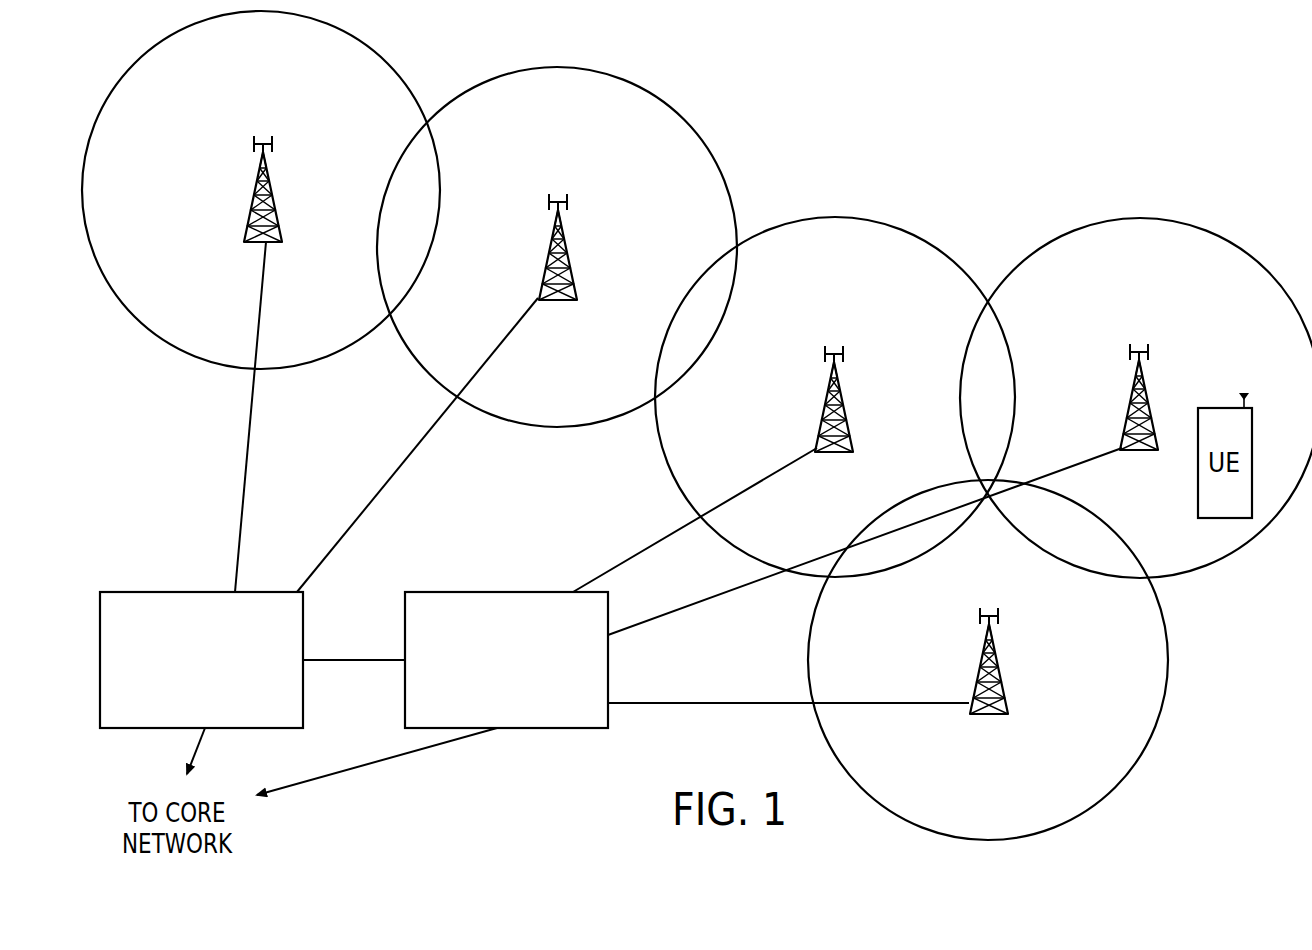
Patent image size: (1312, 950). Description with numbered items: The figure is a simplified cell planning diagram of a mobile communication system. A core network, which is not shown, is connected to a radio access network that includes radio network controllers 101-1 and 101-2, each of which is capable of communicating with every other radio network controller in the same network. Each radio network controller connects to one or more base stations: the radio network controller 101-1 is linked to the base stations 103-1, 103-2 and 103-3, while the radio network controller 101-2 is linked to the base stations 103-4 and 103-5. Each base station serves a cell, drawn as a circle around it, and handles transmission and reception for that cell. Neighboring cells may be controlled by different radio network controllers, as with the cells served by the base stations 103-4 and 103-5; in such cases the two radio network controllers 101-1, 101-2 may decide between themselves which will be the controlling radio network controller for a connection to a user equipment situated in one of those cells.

The radio network controller 101-1 is at (472, 592).
The radio network controller 101-2 is at (152, 592).
The base station 103-1 is at (1148, 387).
The base station 103-2 is at (1000, 655).
The base station 103-3 is at (845, 403).
The base station 103-4 is at (570, 252).
The base station 103-5 is at (273, 193).